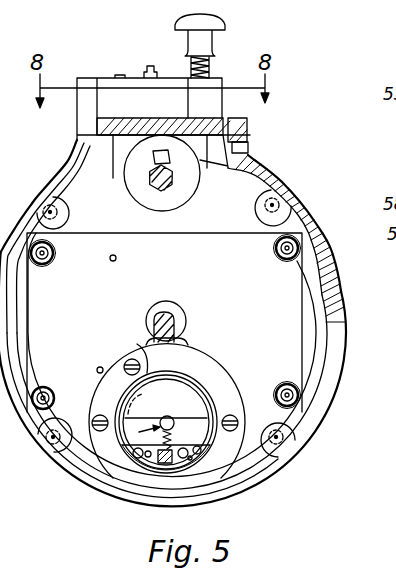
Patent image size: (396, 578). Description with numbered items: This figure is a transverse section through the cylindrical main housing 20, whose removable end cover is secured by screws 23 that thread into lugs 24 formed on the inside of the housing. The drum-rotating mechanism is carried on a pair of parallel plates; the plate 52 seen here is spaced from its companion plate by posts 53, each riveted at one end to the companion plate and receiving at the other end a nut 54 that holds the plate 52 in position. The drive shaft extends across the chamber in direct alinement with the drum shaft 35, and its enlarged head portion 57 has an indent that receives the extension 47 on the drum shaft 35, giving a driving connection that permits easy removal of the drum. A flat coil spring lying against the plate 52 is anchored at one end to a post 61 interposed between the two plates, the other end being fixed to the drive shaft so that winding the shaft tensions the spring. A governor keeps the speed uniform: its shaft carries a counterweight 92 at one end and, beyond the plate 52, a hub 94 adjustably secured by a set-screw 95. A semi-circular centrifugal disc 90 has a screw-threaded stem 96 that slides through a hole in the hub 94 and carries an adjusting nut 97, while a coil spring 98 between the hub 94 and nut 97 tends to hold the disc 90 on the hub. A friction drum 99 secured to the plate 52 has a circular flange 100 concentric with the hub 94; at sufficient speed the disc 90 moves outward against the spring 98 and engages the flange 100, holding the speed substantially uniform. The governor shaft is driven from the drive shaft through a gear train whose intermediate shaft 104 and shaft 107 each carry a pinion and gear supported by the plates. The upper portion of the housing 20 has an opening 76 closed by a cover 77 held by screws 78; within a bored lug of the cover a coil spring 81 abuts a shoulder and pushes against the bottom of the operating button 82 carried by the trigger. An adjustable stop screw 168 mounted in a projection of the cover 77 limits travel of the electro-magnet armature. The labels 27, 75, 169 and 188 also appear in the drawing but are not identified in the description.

The main housing 20 is at (307, 213).
The screws 23 is at (257, 219).
The lugs 24 is at (68, 213).
The inner wall 27 is at (333, 363).
The drum shaft 35 is at (163, 312).
The extension 47 is at (181, 338).
The plate 52 is at (287, 318).
The posts 53 is at (55, 256).
The nuts 54 is at (46, 264).
The enlarged head portion 57 is at (172, 303).
The post 61 is at (116, 257).
The block 75 is at (250, 144).
The opening 76 is at (250, 160).
The cover 77 is at (115, 127).
The screws 78 is at (249, 126).
The coil spring 81 is at (215, 62).
The operating button 82 is at (178, 30).
The centrifugal disc 90 is at (190, 398).
The counterweight 92 is at (125, 455).
The hub 94 is at (167, 418).
The set-screw 95 is at (139, 434).
The screw-threaded stem 96 is at (165, 460).
The adjusting nut 97 is at (150, 453).
The coil spring 98 is at (173, 429).
The friction drum 99 is at (205, 365).
The circular flange 100 is at (126, 356).
The shaft 104 is at (96, 370).
The shaft 107 is at (145, 402).
The stop screw 168 is at (157, 180).
The nut 169 is at (156, 173).
The cover 188 is at (103, 83).